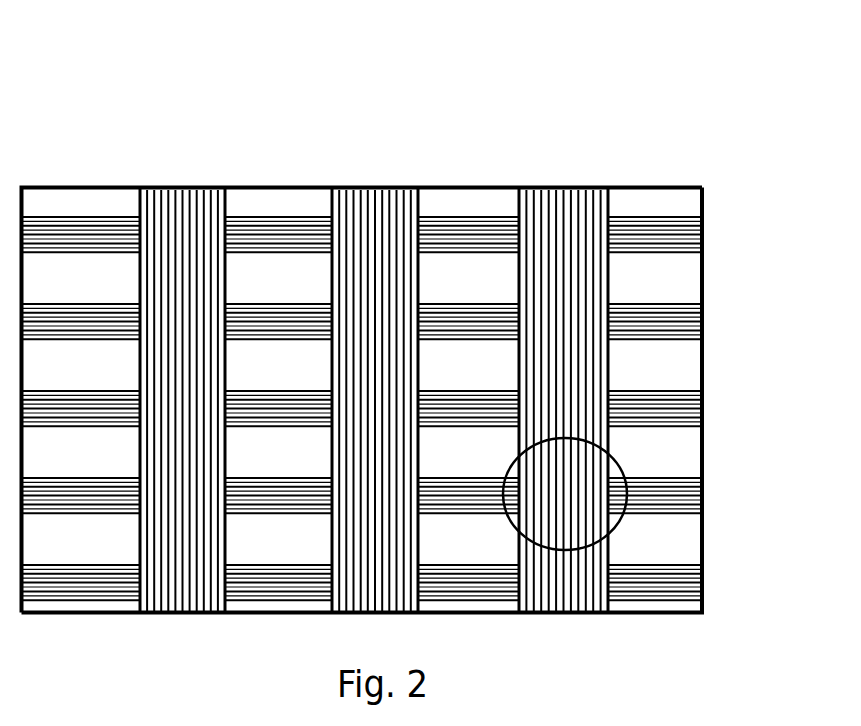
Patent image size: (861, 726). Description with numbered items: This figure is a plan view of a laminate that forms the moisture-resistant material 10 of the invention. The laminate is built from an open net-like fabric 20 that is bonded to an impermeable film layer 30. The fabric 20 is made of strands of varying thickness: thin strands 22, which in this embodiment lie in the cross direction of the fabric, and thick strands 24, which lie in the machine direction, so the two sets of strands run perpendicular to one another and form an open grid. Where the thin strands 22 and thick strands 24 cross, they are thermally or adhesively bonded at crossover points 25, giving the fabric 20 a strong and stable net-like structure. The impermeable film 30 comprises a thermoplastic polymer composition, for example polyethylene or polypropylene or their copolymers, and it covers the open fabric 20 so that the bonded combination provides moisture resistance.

The moisture-resistant material 10 is at (215, 157).
The open net-like fabric 20 is at (719, 312).
The thin strands 22 is at (683, 405).
The thick strands 24 is at (583, 220).
The crossover points 25 is at (639, 512).
The impermeable film layer 30 is at (125, 353).